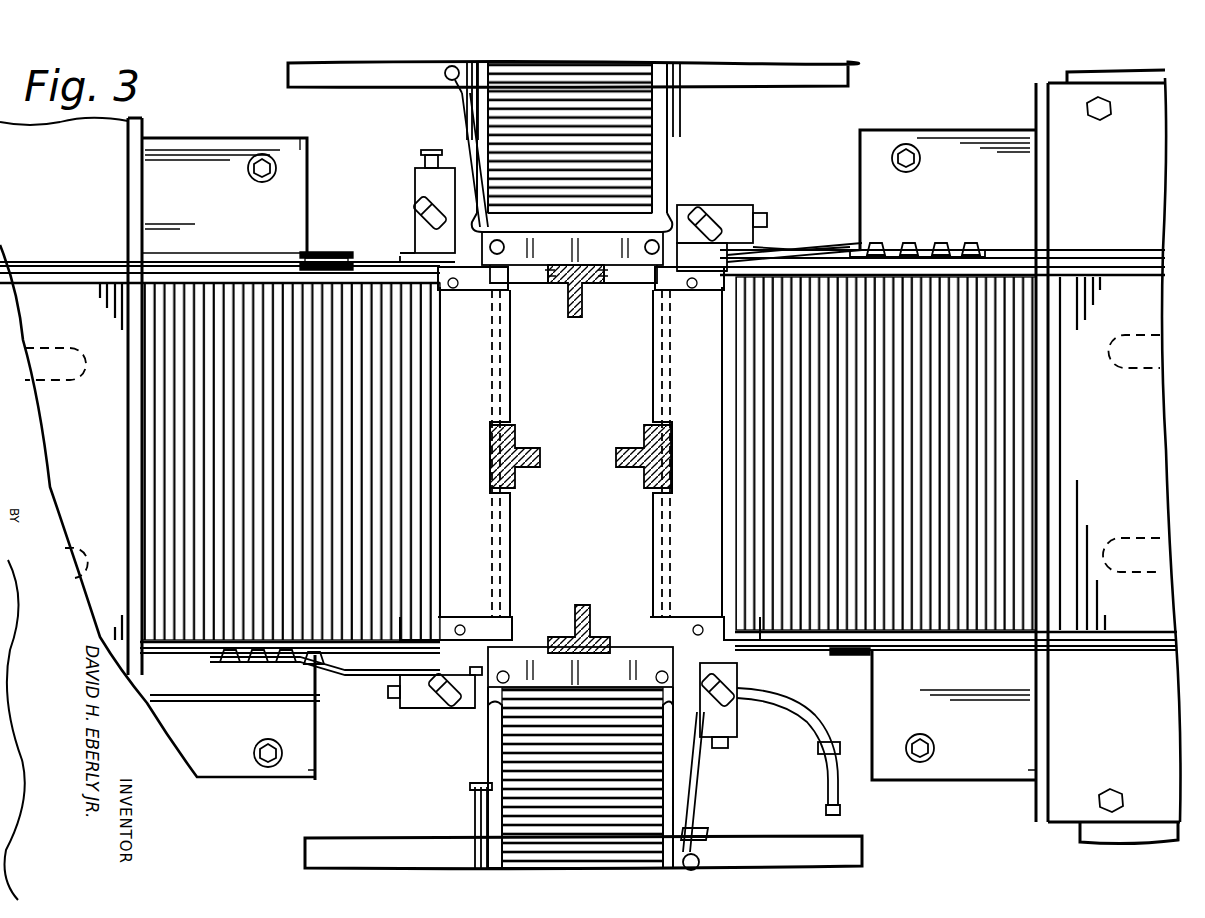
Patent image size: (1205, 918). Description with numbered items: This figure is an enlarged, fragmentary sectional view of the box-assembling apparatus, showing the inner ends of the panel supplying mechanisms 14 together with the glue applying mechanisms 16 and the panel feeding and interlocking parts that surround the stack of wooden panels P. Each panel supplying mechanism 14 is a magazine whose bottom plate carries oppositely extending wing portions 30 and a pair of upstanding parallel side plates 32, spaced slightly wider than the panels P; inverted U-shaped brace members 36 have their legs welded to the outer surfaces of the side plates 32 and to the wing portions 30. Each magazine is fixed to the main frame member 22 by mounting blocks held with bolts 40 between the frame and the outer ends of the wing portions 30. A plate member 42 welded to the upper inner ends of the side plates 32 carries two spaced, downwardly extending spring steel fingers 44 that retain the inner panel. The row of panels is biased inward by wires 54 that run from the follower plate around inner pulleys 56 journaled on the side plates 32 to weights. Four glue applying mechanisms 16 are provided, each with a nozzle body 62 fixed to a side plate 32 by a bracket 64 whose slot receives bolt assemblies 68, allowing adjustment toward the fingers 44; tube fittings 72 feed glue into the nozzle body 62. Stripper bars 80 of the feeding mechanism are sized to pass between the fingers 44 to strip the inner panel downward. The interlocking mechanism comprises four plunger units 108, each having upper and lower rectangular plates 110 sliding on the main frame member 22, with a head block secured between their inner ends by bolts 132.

The panel supplying mechanism 14 is at (481, 778).
The glue applying mechanism 16 is at (752, 682).
The main frame member 22 is at (1085, 835).
The wing portion 30 is at (1062, 730).
The side plate 32 is at (985, 640).
The inverted U-shaped brace member 36 is at (1050, 415).
The bolt 40 is at (1118, 792).
The plate member 42 is at (690, 570).
The inner panel engaging finger 44 is at (510, 595).
The wire 54 is at (1098, 650).
The inner pulley 56 is at (866, 660).
The nozzle body 62 is at (740, 738).
The bracket 64 is at (700, 770).
The bolt assembly 68 is at (706, 832).
The tube fitting 72 is at (743, 669).
The stripper bar 80 is at (583, 605).
The plunger unit 108 is at (892, 786).
The rectangular plate 110 is at (998, 770).
The bolt 132 is at (925, 740).
The wooden panel P is at (510, 748).